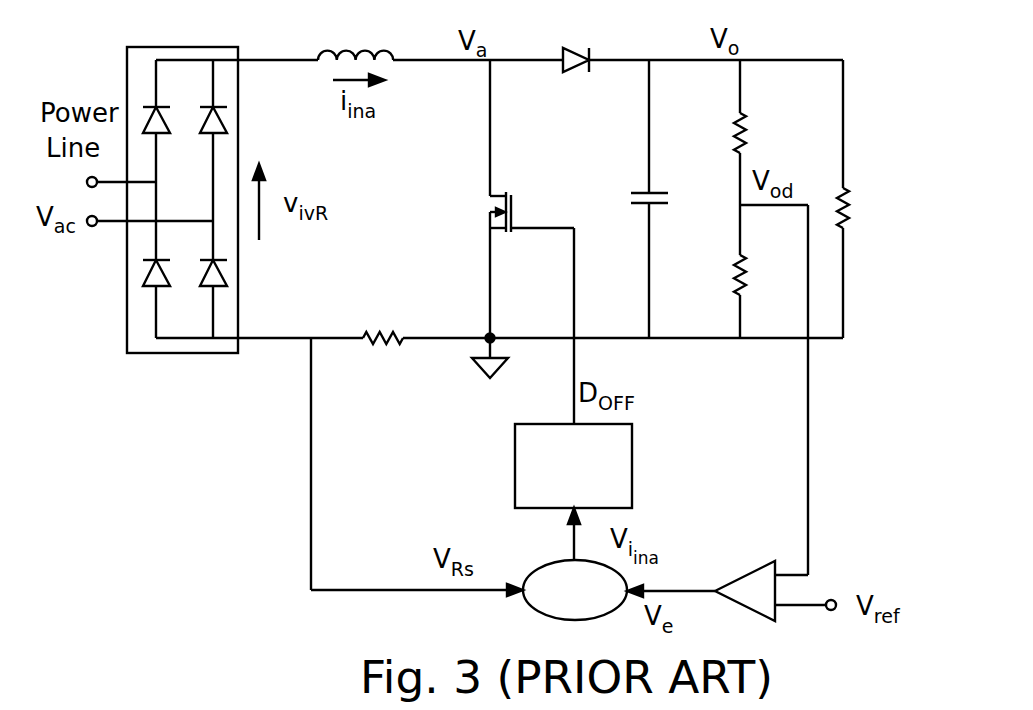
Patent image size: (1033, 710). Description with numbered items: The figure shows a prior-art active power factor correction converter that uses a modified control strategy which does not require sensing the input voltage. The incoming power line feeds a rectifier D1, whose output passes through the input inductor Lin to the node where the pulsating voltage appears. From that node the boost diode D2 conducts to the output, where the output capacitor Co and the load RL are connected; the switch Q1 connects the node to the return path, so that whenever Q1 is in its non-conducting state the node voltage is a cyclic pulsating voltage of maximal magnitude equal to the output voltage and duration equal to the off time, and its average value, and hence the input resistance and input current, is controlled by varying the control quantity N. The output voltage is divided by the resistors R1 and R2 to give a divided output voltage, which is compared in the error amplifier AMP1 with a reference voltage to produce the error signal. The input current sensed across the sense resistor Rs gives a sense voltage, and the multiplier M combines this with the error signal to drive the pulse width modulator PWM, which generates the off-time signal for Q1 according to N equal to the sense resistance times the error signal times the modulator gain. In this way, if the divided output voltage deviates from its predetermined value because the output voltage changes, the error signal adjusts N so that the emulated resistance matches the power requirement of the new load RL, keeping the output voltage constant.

The bridge rectifier D1 is at (182, 221).
The input inductor Lin is at (355, 30).
The boost diode D2 is at (571, 40).
The switch Q1 is at (511, 242).
The output capacitor Co is at (633, 199).
The divider resistor R1 is at (759, 132).
The divider resistor R2 is at (759, 271).
The load RL is at (863, 199).
The sense resistor Rs is at (383, 366).
The pulse width modulator PWM is at (573, 466).
The multiplier M is at (575, 590).
The error amplifier AMP1 is at (766, 572).